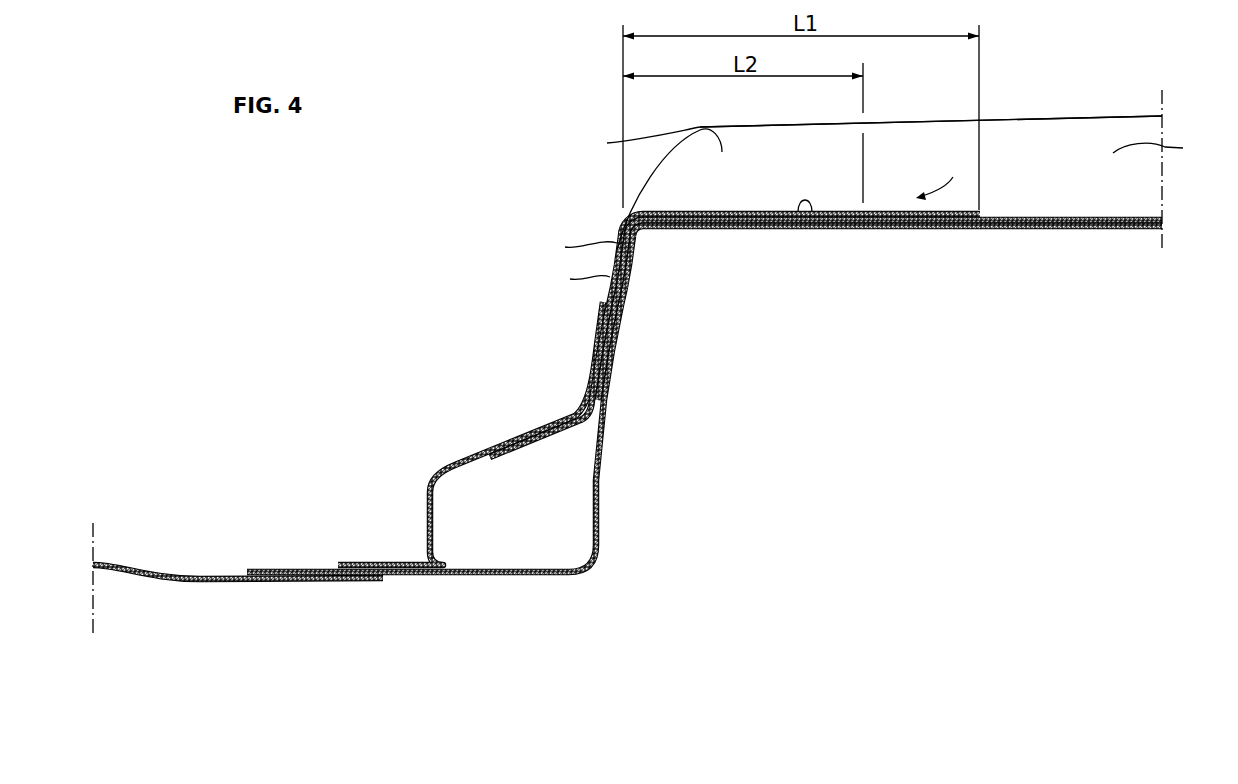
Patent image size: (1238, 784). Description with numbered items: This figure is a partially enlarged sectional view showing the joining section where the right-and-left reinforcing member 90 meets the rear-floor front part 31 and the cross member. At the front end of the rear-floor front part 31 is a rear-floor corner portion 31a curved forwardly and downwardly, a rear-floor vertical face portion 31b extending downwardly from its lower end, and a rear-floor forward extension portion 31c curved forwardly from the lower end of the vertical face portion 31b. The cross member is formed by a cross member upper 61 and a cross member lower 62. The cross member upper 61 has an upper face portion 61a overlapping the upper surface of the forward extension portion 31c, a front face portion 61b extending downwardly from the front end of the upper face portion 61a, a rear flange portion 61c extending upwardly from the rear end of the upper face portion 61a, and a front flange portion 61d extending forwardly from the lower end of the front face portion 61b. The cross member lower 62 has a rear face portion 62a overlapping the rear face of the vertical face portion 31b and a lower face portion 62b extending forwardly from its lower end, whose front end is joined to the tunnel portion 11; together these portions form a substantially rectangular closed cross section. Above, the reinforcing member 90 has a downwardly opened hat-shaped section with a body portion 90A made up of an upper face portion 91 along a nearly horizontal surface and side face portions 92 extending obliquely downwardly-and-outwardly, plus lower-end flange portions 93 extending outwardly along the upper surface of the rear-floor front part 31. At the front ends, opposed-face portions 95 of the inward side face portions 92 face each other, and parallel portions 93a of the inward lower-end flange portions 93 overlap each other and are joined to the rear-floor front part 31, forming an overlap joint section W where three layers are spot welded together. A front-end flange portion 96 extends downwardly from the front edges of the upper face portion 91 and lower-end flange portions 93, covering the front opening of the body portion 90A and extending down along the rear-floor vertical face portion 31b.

The tunnel portion 11 is at (200, 575).
The rear-floor front part 31 is at (850, 321).
The rear-floor corner portion 31a is at (641, 233).
The rear-floor vertical face portion 31b is at (618, 338).
The rear-floor forward extension portion 31c is at (598, 434).
The cross member upper 61 is at (460, 433).
The upper face portion 61a is at (497, 442).
The front face portion 61b is at (427, 510).
The rear flange portion 61c is at (557, 359).
The front flange portion 61d is at (366, 562).
The cross member lower 62 is at (437, 491).
The rear face portion 62a is at (602, 520).
The lower face portion 62b is at (517, 578).
The reinforcing member 90 is at (1000, 100).
The body portion 90A is at (1027, 138).
The upper face portion 91 is at (1120, 117).
The side face portion 92 is at (1161, 148).
The lower-end flange portion 93 is at (1040, 212).
The parallel portion 93a is at (805, 212).
The opposed-face portion 95 is at (636, 142).
The front-end flange portion 96 is at (577, 265).
The overlap joint section W is at (941, 178).